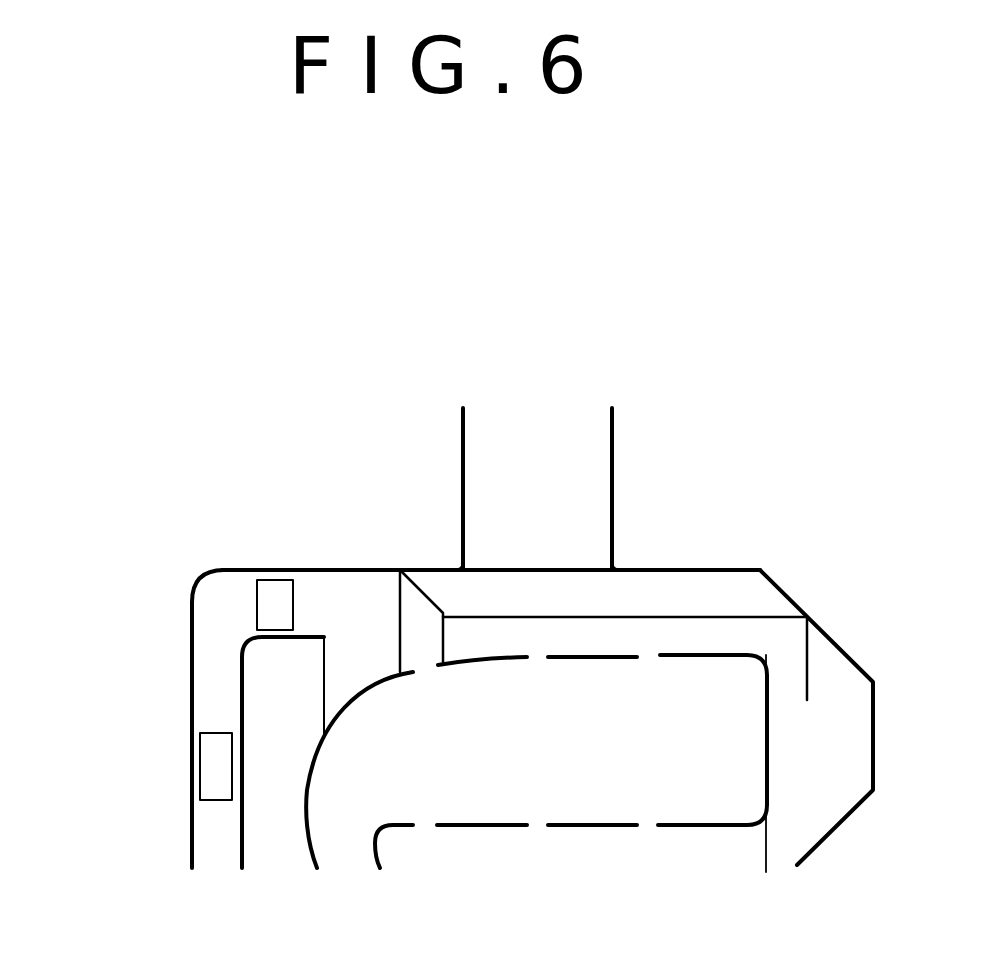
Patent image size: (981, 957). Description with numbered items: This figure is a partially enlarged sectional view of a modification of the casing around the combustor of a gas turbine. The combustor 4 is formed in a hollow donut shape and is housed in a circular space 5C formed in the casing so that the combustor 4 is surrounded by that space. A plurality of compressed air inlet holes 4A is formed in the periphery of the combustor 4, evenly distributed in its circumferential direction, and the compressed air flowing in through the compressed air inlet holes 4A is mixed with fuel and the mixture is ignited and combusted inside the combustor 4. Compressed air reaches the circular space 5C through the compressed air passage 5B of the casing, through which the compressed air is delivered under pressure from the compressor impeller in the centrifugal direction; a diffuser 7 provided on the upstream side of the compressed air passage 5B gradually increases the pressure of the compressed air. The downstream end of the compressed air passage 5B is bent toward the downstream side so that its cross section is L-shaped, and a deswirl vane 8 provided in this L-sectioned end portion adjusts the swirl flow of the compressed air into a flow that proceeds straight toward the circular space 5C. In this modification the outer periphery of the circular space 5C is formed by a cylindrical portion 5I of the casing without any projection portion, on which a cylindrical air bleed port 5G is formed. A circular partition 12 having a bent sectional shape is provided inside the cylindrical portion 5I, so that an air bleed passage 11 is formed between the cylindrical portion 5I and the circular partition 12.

The combustor 4 is at (772, 767).
The compressed air inlet holes 4A is at (540, 658).
The compressed air passage 5B is at (220, 668).
The circular space 5C is at (842, 752).
The cylindrical air bleed port 5G is at (462, 495).
The cylindrical portion 5I is at (663, 568).
The diffuser 7 is at (215, 733).
The deswirl vane 8 is at (257, 603).
The air bleed passage 11 is at (665, 600).
The circular partition 12 is at (598, 607).